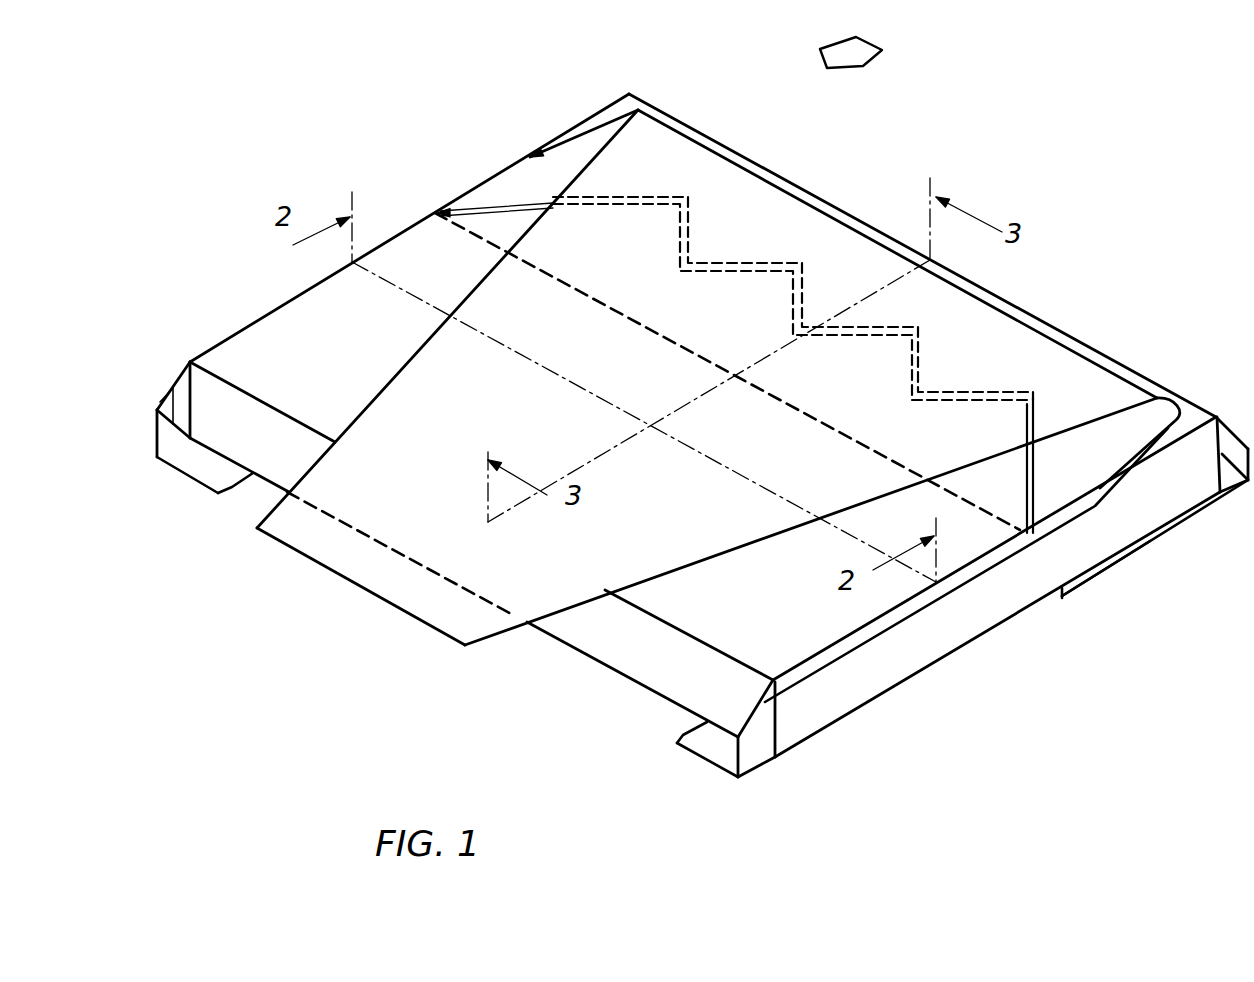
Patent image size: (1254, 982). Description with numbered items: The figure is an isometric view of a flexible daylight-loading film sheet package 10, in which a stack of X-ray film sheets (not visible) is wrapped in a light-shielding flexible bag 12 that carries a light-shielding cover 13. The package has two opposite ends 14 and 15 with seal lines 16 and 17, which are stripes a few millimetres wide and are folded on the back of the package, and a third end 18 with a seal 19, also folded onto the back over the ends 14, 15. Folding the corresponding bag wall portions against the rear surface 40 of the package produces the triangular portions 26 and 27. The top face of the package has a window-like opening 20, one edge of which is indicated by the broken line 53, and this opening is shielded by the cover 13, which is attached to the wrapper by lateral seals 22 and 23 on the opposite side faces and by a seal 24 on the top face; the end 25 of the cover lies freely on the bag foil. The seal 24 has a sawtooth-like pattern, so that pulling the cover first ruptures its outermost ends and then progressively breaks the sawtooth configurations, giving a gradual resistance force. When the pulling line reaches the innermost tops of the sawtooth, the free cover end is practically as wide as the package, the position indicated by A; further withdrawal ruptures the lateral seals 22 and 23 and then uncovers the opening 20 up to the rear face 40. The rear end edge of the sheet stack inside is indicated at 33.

The film sheet package 10 is at (868, 62).
The light-shielding flexible bag 12 is at (962, 620).
The light-shielding cover 13 is at (838, 625).
The end 14 is at (198, 468).
The end 15 is at (720, 764).
The seal line 16 is at (232, 490).
The seal line 17 is at (670, 742).
The third end 18 is at (1185, 518).
The seal 19 is at (1110, 568).
The window-like opening 20 is at (388, 258).
The lateral seal 22 is at (160, 407).
The lateral seal 23 is at (826, 683).
The seal 24 is at (500, 205).
The end of the cover 25 is at (503, 298).
The triangular portion 26 is at (180, 383).
The triangular portion 27 is at (762, 750).
The rear end edge of the stack of sheets 33 is at (566, 566).
The rear surface of the package 40 is at (577, 633).
The broken line of the opening 53 is at (806, 402).
The position A is at (1099, 495).